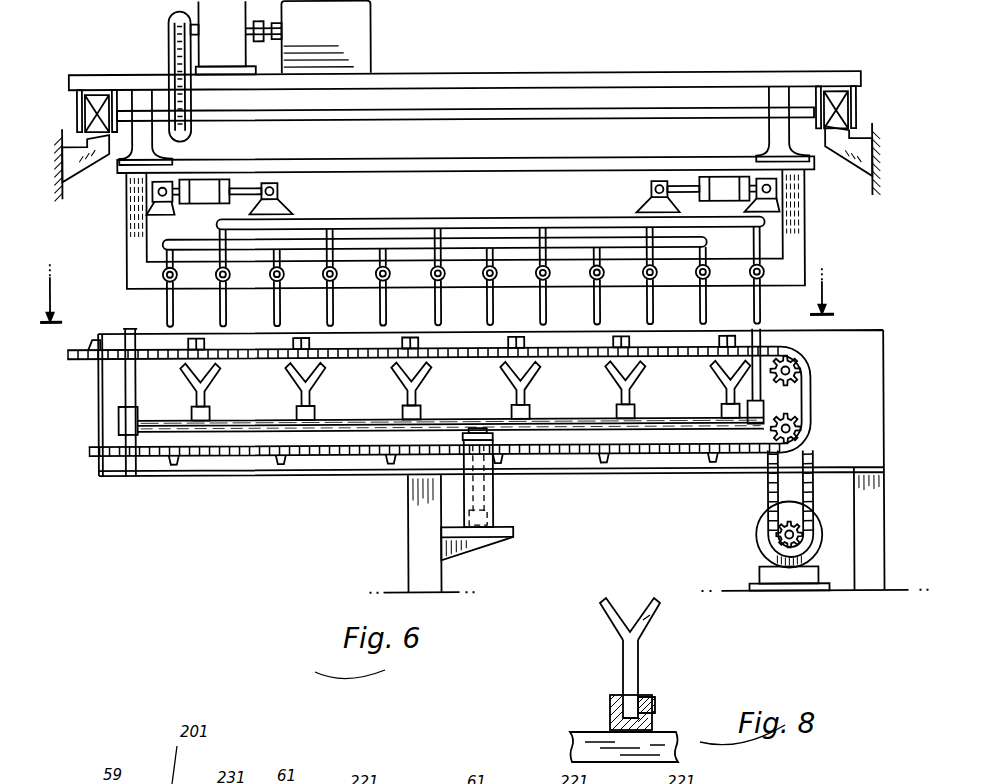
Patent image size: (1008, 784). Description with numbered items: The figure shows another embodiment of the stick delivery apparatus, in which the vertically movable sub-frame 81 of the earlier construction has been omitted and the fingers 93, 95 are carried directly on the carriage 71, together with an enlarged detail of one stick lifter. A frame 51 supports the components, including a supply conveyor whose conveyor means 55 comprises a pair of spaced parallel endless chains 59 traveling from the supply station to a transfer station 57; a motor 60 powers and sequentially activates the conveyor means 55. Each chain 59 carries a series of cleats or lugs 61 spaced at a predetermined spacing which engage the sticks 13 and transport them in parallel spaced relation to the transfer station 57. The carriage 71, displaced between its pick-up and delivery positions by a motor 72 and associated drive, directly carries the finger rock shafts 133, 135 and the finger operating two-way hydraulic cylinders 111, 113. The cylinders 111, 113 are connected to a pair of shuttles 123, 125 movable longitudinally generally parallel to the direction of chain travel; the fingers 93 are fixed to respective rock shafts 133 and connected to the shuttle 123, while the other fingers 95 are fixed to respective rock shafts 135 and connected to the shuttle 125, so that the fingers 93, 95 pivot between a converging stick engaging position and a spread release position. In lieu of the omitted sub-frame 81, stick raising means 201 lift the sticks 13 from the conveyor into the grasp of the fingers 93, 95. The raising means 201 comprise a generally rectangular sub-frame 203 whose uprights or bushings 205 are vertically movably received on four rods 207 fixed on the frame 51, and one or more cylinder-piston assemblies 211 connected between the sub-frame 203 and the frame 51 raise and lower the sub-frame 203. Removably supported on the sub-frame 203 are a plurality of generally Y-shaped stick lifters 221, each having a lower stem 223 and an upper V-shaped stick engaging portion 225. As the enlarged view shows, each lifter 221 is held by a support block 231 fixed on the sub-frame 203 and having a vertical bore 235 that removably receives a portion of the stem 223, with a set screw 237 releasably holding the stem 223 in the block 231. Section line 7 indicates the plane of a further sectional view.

In FIG. 6, the motor 72 is at (370, 17).
In FIG. 6, the carriage 71 is at (556, 62).
In FIG. 6, the sub-frame 81 is at (460, 162).
In FIG. 6, the frame 51 is at (73, 157).
In FIG. 6, the two-way hydraulic cylinder 111 is at (208, 182).
In FIG. 6, the two-way hydraulic cylinder 113 is at (722, 180).
In FIG. 6, the shuttle 123 is at (409, 218).
In FIG. 6, the shuttle 125 is at (567, 240).
In FIG. 6, the rock shaft 133 is at (163, 274).
In FIG. 6, the rock shaft 135 is at (765, 274).
In FIG. 6, the finger 93 is at (167, 303).
In FIG. 6, the finger 95 is at (227, 303).
In FIG. 6, the section line 7- 7 is at (444, 291).
In FIG. 6, the rod 207 is at (125, 380).
In FIG. 6, the bushing 205 is at (118, 416).
In FIG. 6, the sub-frame 203 is at (160, 432).
In FIG. 8, the sub-frame 203 is at (660, 743).
In FIG. 6, the stick raising means 201 is at (254, 432).
In FIG. 6, the support block 231 is at (296, 411).
In FIG. 8, the support block 231 is at (610, 704).
In FIG. 6, the stick lifter 221 is at (407, 393).
In FIG. 8, the stick lifter 221 is at (623, 658).
In FIG. 6, the stick 13 is at (190, 370).
In FIG. 6, the cleat 61 is at (176, 357).
In FIG. 6, the chain 59 is at (273, 356).
In FIG. 6, the conveyor means 55 is at (448, 364).
In FIG. 6, the transfer station 57 is at (568, 320).
In FIG. 6, the cylinder-piston assembly 211 is at (487, 500).
In FIG. 6, the motor 60 is at (757, 531).
In FIG. 8, the V-shape stick engaging portion 225 is at (645, 620).
In FIG. 8, the lifter stem 223 is at (633, 672).
In FIG. 8, the vertical bore 235 is at (637, 699).
In FIG. 8, the set screw 237 is at (655, 698).